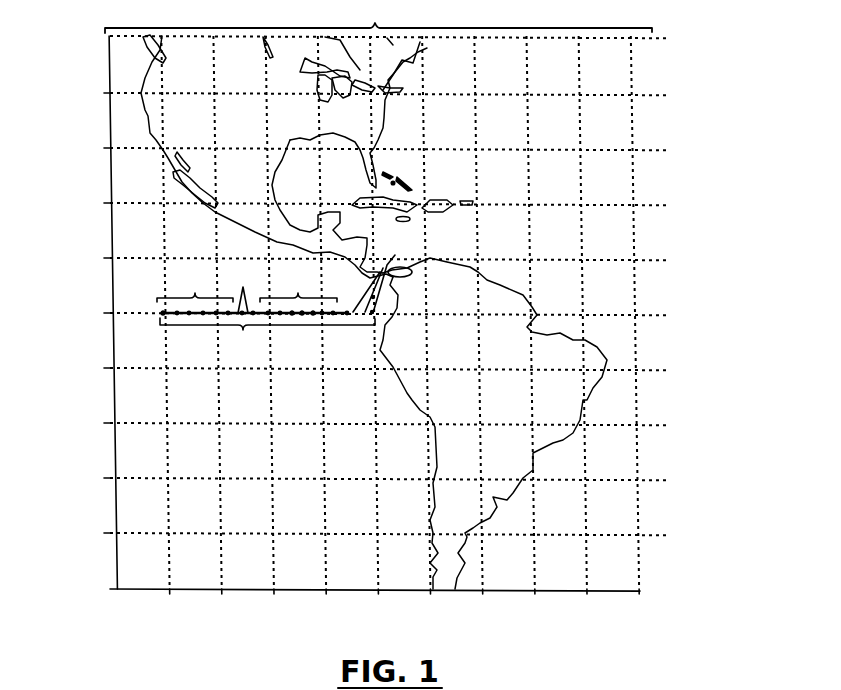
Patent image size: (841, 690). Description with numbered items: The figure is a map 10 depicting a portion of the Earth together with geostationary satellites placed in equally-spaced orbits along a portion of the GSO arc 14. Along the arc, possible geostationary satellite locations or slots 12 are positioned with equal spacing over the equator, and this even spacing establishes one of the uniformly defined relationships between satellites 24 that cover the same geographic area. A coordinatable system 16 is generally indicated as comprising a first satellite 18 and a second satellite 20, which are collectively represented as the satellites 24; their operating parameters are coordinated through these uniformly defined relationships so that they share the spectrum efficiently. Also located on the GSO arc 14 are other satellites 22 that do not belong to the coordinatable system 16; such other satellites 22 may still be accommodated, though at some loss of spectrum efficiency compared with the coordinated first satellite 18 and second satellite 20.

The map 10 is at (693, 134).
The slots 12 is at (266, 317).
The GSO arc 14 is at (563, 313).
The coordinatable system 16 is at (378, 17).
The first satellite 18 is at (195, 288).
The second satellite 20 is at (298, 286).
The other satellites 22 is at (162, 314).
The satellites 24 is at (321, 272).